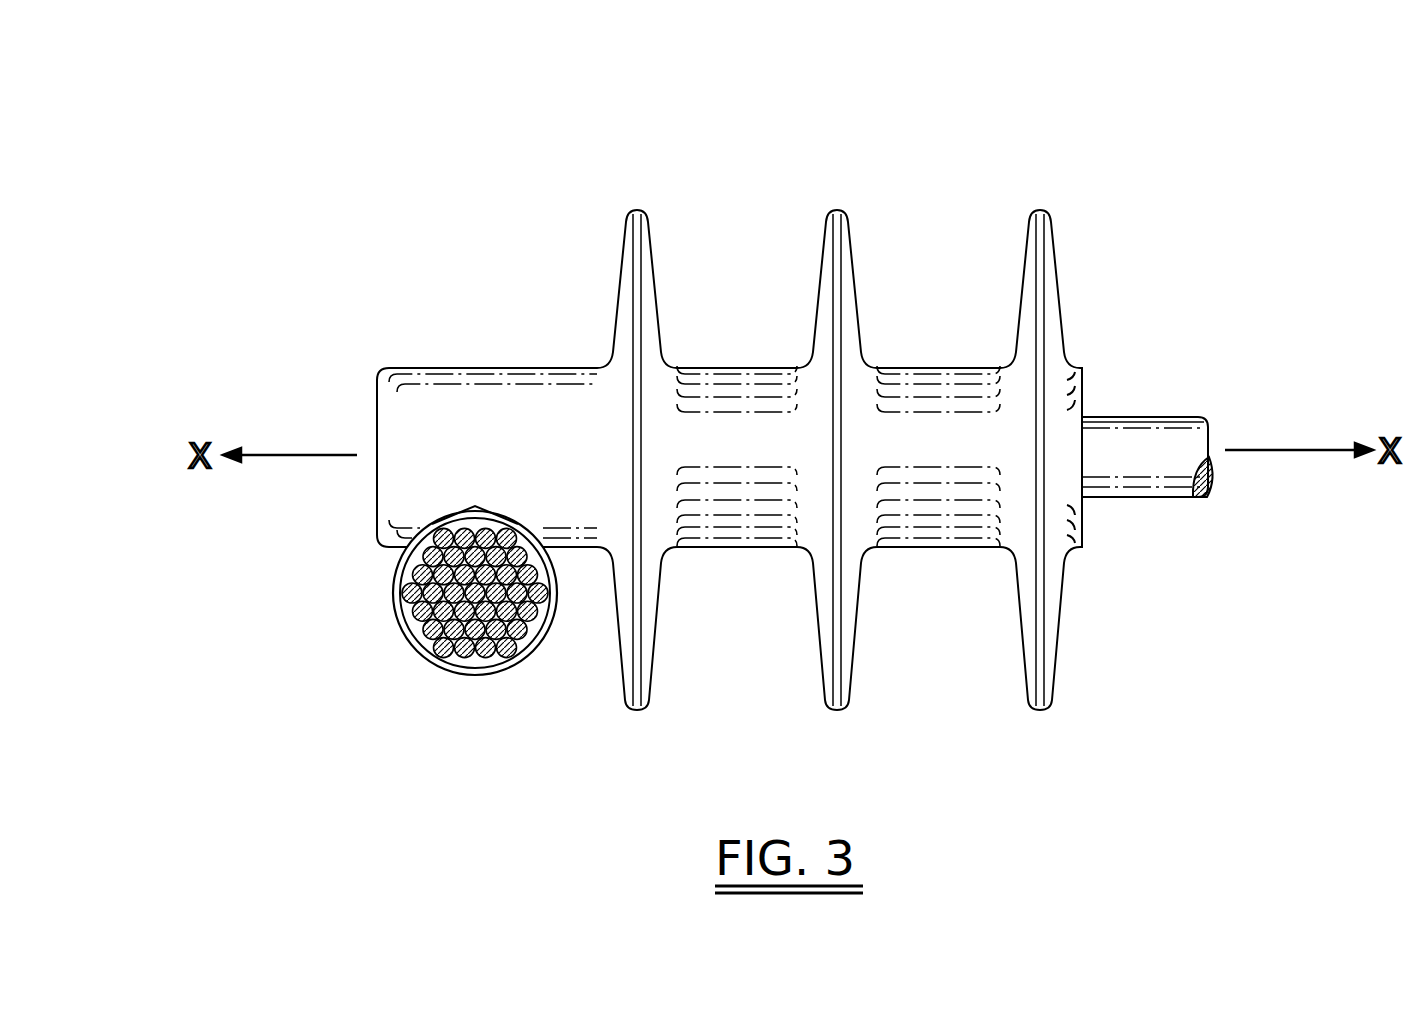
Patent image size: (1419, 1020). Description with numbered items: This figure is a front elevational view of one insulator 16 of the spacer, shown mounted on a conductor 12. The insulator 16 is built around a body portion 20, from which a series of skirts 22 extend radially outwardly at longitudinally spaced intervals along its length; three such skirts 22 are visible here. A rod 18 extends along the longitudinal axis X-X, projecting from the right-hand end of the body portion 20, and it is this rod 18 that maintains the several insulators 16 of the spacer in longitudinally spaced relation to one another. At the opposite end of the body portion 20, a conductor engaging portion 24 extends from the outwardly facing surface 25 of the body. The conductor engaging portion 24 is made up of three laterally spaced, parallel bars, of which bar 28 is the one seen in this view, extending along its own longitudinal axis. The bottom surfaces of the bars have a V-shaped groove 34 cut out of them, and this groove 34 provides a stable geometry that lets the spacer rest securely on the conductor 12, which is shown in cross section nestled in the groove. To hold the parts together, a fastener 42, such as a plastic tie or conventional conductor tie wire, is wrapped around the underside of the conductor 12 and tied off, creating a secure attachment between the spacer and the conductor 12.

The conductor 12 is at (423, 660).
The insulator 16 is at (858, 175).
The rod 18 is at (1138, 438).
The body portion 20 is at (892, 535).
The skirts 22 is at (628, 210).
The conductor engaging portion 24 is at (362, 352).
The outwardly facing surface 25 is at (617, 302).
The bar 28 is at (392, 413).
The V-shaped groove 34 is at (475, 505).
The fastener 42 is at (498, 678).